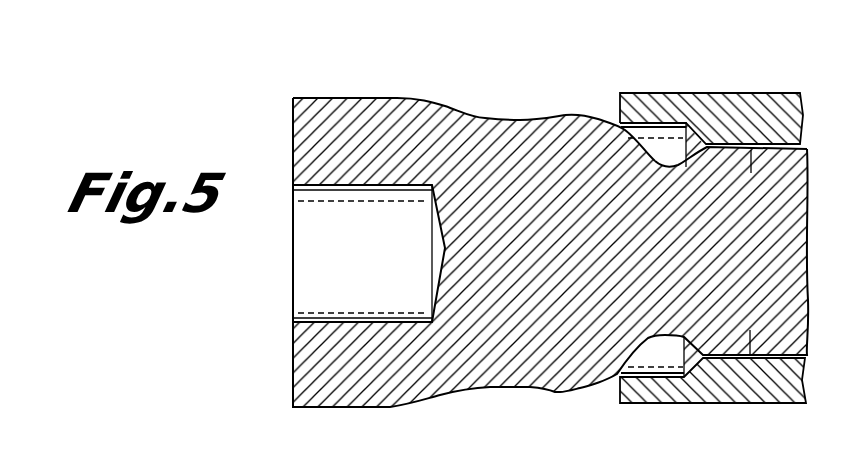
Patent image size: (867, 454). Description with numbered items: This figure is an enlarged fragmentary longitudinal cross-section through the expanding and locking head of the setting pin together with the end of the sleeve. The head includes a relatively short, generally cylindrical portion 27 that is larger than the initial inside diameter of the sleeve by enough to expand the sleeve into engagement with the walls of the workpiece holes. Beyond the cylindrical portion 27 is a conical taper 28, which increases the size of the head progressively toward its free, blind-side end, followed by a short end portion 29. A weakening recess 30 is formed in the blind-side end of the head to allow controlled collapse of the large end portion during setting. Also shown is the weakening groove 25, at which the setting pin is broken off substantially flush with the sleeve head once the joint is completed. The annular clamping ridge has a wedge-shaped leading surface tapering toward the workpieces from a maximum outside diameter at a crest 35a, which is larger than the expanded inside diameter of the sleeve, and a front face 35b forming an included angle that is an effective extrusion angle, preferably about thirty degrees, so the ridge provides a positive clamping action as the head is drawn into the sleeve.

The weakening groove 25 is at (766, 150).
The cylindrical portion 27 is at (514, 120).
The conical taper 28 is at (436, 99).
The end portion 29 is at (394, 97).
The weakening recess 30 is at (330, 187).
The crest 35a is at (567, 117).
The front face 35b is at (588, 118).